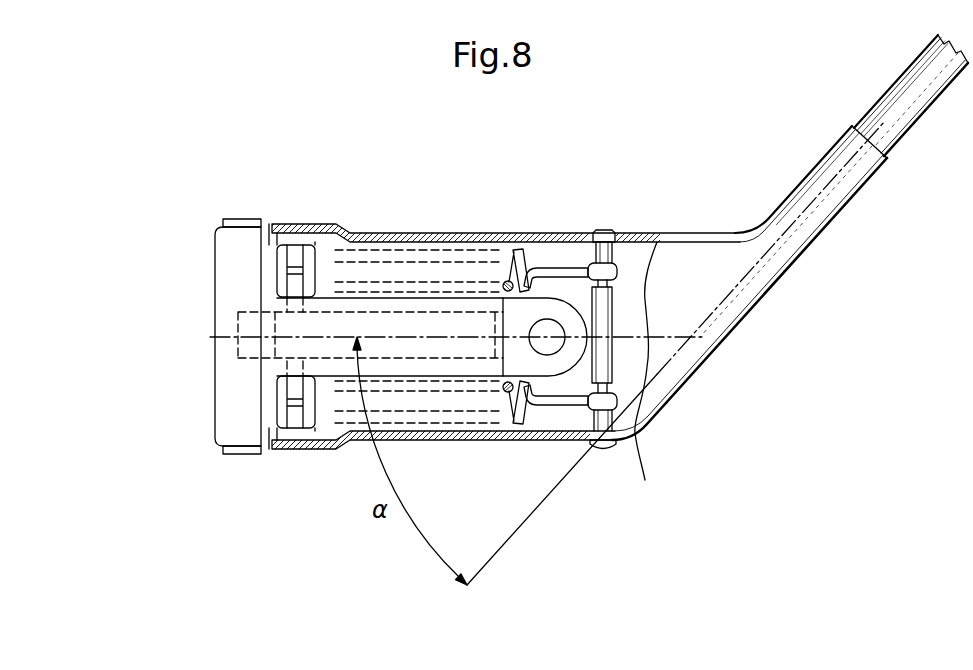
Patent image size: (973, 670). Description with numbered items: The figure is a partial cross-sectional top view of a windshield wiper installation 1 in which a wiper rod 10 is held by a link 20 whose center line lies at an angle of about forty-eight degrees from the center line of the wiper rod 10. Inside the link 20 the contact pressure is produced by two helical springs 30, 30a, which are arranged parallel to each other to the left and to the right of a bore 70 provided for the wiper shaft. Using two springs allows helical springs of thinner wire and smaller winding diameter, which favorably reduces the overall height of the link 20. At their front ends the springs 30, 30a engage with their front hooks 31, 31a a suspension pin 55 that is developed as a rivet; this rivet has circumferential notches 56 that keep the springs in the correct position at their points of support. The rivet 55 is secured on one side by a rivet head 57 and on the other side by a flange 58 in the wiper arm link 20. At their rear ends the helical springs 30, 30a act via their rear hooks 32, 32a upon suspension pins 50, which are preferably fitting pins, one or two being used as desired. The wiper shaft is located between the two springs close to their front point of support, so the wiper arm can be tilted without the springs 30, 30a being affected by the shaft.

The damper assembly 1 is at (792, 337).
The wiper rod 10 is at (907, 95).
The link 20 is at (555, 253).
The helical spring 30 is at (530, 437).
The helical spring 30a is at (522, 249).
The front hook 31 is at (577, 408).
The front hook 31a is at (618, 270).
The rear hook 32 is at (278, 205).
The rear hook 32a is at (278, 205).
The suspension pins 50 is at (290, 390).
The suspension pin 55 is at (627, 442).
The circumferential notch 56 is at (617, 263).
The rivet head 57 is at (604, 448).
The flange 58 is at (605, 230).
The bore 70 is at (548, 343).